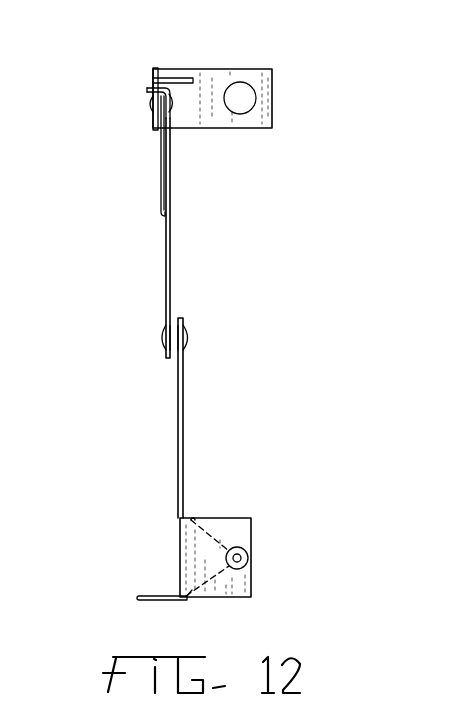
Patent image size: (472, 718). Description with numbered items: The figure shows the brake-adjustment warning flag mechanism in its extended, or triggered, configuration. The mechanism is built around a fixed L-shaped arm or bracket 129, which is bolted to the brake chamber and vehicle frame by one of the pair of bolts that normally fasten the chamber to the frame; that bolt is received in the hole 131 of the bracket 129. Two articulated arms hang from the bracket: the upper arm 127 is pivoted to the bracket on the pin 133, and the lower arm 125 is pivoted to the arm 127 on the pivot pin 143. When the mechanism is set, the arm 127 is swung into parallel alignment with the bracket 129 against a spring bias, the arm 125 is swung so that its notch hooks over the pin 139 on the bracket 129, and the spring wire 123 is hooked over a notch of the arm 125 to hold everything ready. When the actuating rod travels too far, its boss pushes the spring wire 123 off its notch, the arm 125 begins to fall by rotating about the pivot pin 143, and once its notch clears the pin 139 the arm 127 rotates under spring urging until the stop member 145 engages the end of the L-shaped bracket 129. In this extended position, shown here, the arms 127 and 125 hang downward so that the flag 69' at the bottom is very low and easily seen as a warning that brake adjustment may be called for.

The L-shaped arm or bracket 129 is at (227, 76).
The hole 131 is at (240, 110).
The pin 139 is at (183, 78).
The pin 133 is at (157, 106).
The stop member 145 is at (150, 90).
The arm 127 is at (171, 283).
The pivot pin 143 is at (190, 338).
The arm 125 is at (180, 445).
The flag 69' is at (245, 565).
The spring wire 123 is at (150, 596).